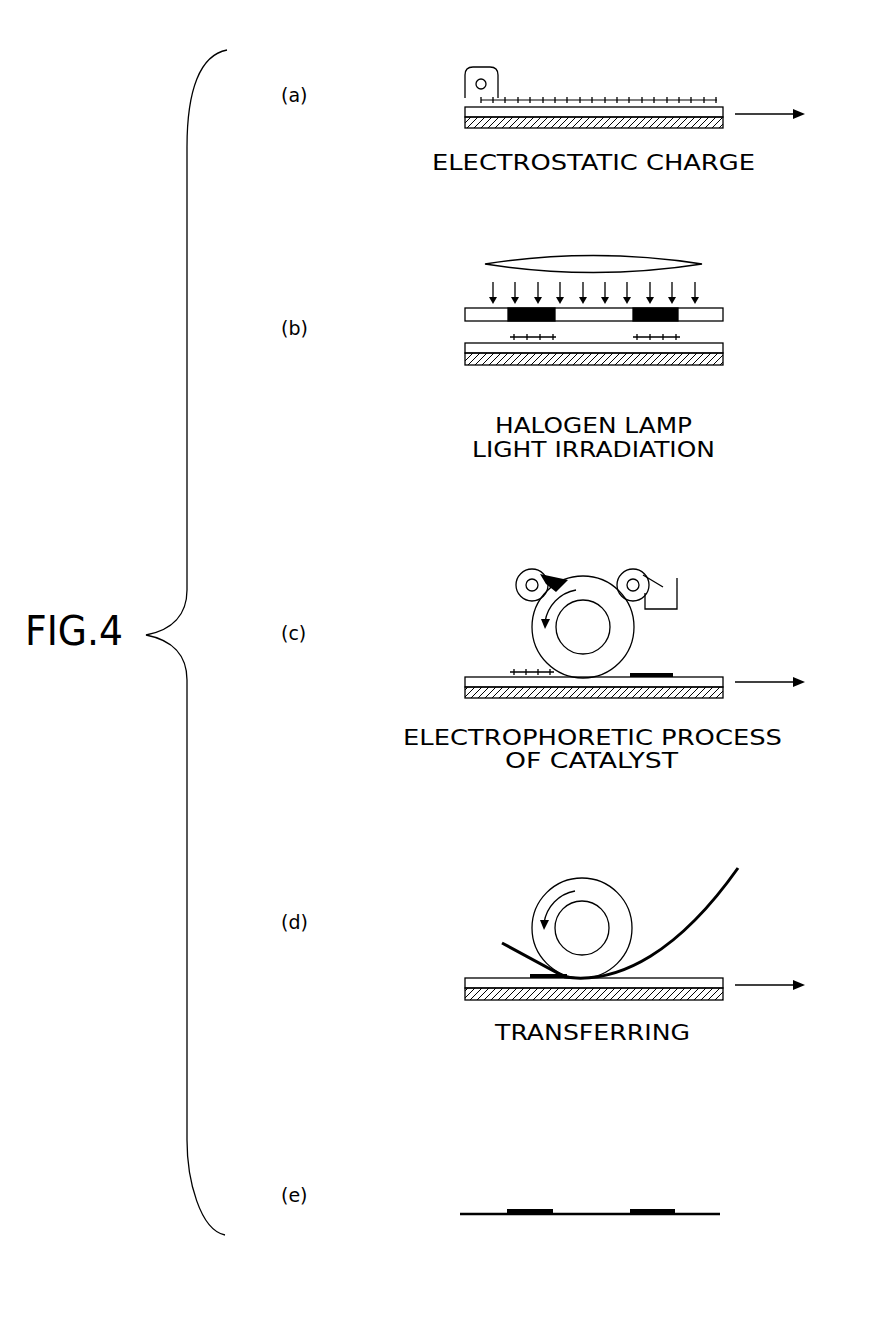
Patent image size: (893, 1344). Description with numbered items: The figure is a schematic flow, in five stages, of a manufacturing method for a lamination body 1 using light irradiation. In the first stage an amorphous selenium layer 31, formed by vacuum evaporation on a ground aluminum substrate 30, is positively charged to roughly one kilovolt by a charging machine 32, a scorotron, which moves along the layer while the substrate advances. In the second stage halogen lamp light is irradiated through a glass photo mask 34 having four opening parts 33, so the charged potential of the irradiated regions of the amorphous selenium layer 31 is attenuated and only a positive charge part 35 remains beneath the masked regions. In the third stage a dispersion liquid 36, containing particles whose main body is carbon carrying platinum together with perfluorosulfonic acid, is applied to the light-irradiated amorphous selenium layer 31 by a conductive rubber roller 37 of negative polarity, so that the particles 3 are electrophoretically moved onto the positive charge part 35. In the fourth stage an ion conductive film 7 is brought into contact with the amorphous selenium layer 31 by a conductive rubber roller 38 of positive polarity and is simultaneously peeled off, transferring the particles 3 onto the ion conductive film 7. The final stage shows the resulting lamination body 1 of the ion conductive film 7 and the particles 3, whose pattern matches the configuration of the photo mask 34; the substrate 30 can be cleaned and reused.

The lamination body 1 is at (738, 1180).
The particle 3 is at (650, 672).
The ion conductive film 7 is at (722, 882).
The substrate 30 is at (465, 122).
The amorphous selenium layer 31 is at (465, 110).
The charging machine 32 is at (480, 67).
The opening part 33 is at (480, 306).
The glass photo mask 34 is at (465, 314).
The positive charge part 35 is at (680, 336).
The dispersion liquid 36 is at (560, 577).
The conductive rubber roller 37 is at (595, 578).
The conductive rubber roller 38 is at (620, 890).